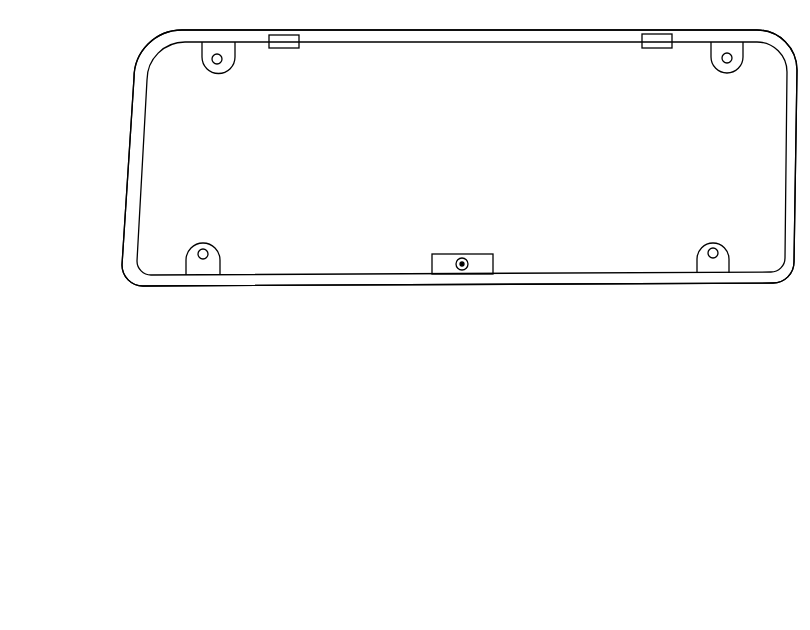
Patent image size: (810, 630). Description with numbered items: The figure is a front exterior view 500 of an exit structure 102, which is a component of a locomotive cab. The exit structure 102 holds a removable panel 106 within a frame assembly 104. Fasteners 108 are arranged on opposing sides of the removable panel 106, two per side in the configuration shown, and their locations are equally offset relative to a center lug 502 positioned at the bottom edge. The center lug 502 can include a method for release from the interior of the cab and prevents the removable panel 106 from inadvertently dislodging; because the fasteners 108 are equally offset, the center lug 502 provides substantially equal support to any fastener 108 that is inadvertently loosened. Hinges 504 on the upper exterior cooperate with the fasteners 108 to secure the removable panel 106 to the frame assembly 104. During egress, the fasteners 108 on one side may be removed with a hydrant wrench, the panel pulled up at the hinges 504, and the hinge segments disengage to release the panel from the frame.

The front exterior view 500 is at (458, 538).
The exit structure 102 is at (240, 310).
The frame assembly 104 is at (126, 136).
The removable panel 106 is at (490, 172).
The fastener 108 is at (218, 78).
The center lug 502 is at (462, 279).
The hinges 504 is at (285, 52).